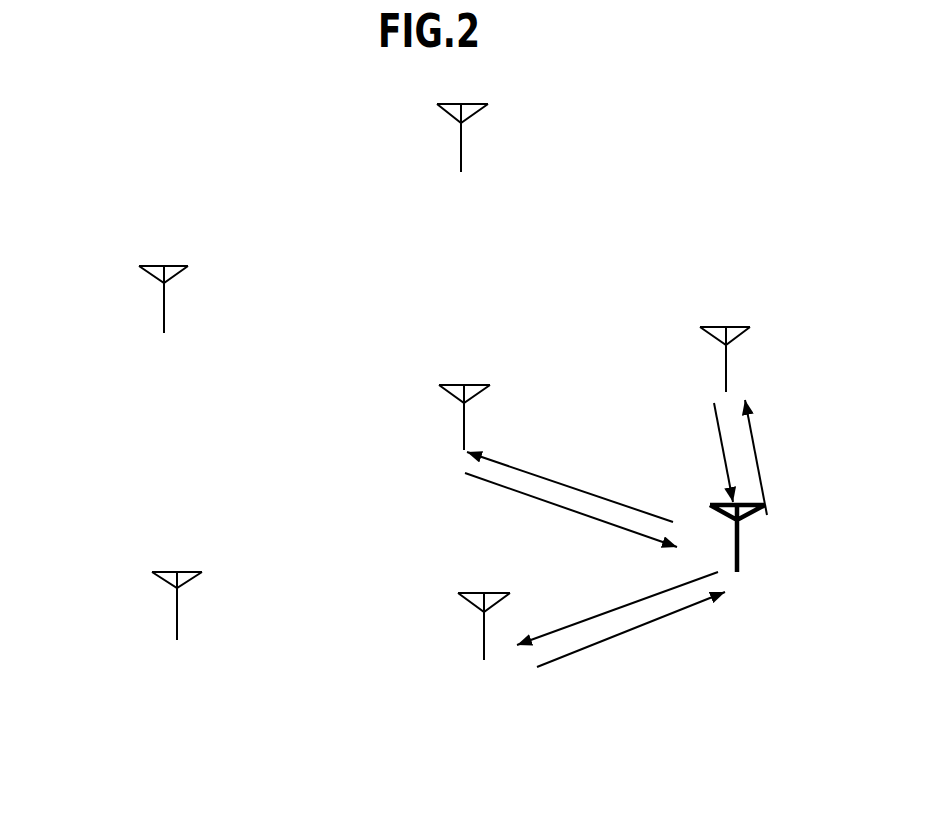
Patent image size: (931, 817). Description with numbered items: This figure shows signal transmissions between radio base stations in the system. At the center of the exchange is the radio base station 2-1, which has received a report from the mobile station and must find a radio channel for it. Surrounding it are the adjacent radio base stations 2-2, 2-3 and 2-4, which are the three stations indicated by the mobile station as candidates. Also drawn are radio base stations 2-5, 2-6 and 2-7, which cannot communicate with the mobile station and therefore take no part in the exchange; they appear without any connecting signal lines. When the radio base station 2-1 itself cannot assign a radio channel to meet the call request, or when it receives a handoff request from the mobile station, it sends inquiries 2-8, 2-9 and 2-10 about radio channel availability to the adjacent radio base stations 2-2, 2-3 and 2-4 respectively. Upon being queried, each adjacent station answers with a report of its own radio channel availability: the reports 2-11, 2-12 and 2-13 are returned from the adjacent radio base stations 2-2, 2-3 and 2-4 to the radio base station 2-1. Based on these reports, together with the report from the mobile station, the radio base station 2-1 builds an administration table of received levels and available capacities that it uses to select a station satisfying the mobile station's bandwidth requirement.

The radio base station 2-1 is at (766, 538).
The adjacent radio base station 2-2 is at (744, 361).
The adjacent radio base station 2-3 is at (440, 429).
The adjacent radio base station 2-4 is at (459, 635).
The radio base station 2-5 is at (148, 615).
The radio base station 2-6 is at (139, 308).
The radio base station 2-7 is at (439, 147).
The inquiry 2-8 is at (778, 457).
The inquiry 2-9 is at (570, 484).
The inquiry 2-10 is at (617, 608).
The report 2-11 is at (698, 452).
The report 2-12 is at (571, 510).
The report 2-13 is at (631, 630).